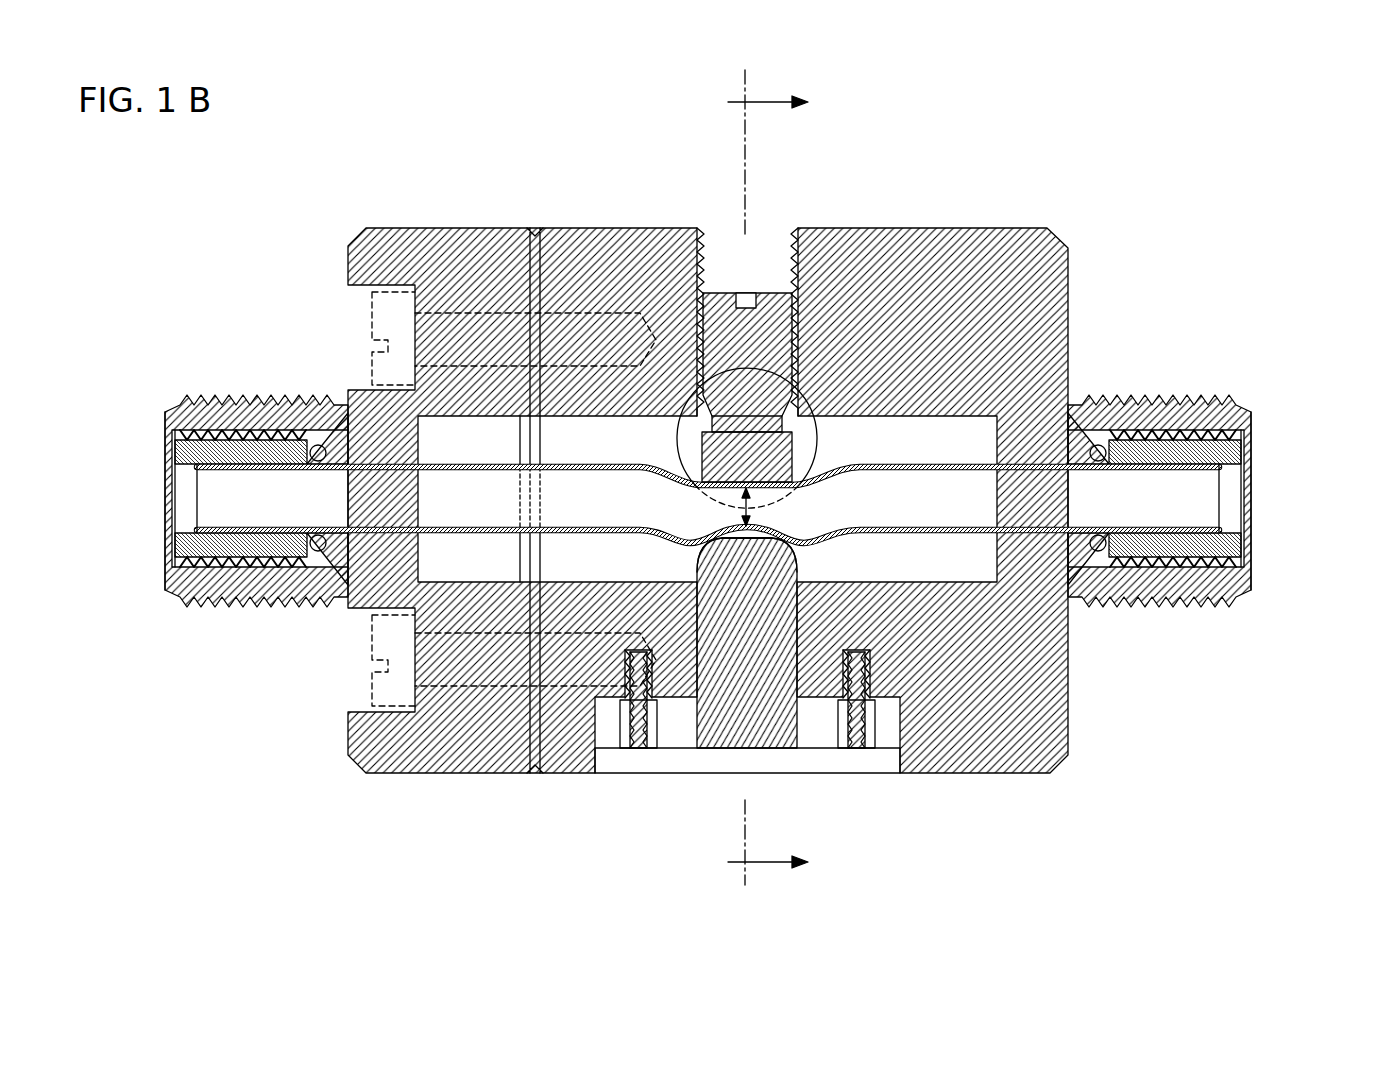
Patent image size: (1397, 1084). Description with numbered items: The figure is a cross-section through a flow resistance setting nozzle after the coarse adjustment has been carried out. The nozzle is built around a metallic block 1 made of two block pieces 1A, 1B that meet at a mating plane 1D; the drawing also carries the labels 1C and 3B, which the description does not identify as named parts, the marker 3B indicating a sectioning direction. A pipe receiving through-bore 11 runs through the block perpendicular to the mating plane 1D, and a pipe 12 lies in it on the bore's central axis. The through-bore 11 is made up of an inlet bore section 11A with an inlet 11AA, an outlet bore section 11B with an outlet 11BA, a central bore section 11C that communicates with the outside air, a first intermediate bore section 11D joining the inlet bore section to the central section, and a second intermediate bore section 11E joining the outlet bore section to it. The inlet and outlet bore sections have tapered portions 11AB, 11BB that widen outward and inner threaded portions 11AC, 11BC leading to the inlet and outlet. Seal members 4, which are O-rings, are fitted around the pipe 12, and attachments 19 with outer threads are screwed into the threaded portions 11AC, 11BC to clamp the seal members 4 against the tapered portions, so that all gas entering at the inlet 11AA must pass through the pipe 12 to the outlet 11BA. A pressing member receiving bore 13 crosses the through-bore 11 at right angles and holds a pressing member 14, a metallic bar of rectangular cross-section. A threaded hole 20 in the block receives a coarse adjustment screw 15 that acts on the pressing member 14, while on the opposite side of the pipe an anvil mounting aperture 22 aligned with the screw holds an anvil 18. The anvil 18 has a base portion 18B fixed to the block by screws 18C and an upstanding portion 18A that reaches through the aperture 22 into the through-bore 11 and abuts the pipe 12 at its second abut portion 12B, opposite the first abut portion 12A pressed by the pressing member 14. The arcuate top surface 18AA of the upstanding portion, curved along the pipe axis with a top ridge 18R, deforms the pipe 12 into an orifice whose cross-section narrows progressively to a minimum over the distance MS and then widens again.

The metallic block 1 is at (695, 473).
The block piece 1A is at (468, 228).
The block piece 1B is at (590, 228).
The cable pocket 1C is at (397, 317).
The mating plane 1D is at (535, 228).
The section line 3B is at (751, 477).
The seal members (O-rings) 4 is at (318, 552).
The pipe receiving through-bore 11 is at (720, 487).
The inlet bore section 11A is at (1224, 476).
The inlet 11AA is at (1250, 473).
The tapered portion 11AB is at (1113, 437).
The inner threaded portion 11AC is at (1173, 435).
The outlet bore section 11B is at (204, 517).
The outlet 11BA is at (172, 490).
The tapered portion 11BB is at (230, 438).
The inner threaded portion 11BC is at (223, 565).
The central bore section 11C is at (1015, 530).
The first intermediate bore section 11D is at (1068, 632).
The second intermediate bore section 11E is at (356, 462).
The pipe 12 is at (885, 529).
The first abut portion 12A is at (723, 425).
The second abut portion 12B is at (692, 690).
The pressing member receiving bore 13 is at (818, 440).
The pressing member 14 is at (717, 457).
The coarse adjustment screw 15 is at (726, 283).
The anvil 18 is at (799, 731).
The upstanding portion 18A is at (777, 620).
The arcuate top surface 18AA is at (860, 640).
The base portion 18B is at (800, 735).
The screws 18C is at (628, 715).
The top ridge 18R is at (772, 690).
The attachments 19 is at (180, 548).
The threaded hole 20 is at (737, 340).
The anvil mounting aperture 22 is at (637, 748).
The minimum cross-sectional area distance MS is at (853, 470).